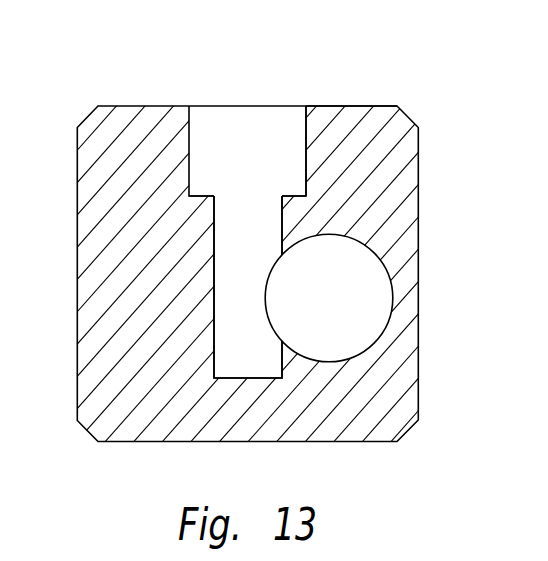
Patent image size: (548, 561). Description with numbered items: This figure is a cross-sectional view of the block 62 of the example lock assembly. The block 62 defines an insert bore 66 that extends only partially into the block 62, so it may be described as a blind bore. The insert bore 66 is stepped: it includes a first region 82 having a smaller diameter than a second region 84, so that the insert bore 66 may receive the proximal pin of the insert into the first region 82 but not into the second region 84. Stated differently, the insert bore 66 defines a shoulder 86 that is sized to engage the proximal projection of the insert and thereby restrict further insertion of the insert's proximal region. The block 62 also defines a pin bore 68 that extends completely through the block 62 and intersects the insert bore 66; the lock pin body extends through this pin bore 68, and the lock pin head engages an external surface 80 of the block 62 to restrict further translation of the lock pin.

The block 62 is at (405, 65).
The insert bore 66 is at (192, 147).
The pin bore 68 is at (355, 238).
The external surface 80 is at (338, 106).
The first region 82 is at (305, 143).
The second region 84 is at (214, 286).
The shoulder 86 is at (205, 196).